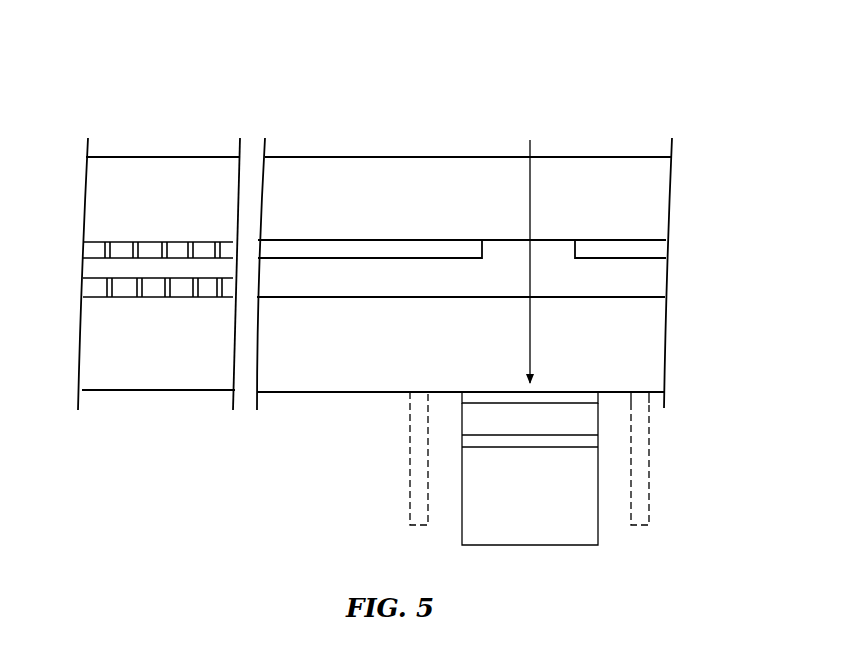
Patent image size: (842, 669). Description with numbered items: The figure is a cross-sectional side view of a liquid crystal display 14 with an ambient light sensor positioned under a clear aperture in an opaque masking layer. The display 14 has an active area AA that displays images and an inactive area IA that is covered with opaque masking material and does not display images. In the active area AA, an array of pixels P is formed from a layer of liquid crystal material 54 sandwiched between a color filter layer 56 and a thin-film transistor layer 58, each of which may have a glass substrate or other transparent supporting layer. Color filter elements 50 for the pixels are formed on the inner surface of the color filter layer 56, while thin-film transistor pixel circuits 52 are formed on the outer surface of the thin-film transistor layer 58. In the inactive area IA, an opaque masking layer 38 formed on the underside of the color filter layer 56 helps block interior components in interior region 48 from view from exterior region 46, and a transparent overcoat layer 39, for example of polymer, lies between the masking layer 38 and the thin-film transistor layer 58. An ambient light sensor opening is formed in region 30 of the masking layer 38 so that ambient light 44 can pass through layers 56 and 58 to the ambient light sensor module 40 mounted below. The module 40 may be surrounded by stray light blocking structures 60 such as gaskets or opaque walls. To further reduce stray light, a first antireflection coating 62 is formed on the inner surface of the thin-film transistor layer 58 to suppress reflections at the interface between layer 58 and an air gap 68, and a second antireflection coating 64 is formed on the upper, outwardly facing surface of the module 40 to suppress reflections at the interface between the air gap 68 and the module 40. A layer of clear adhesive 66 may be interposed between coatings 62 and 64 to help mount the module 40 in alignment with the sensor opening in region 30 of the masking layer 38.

The display 14 is at (633, 53).
The active area AA is at (235, 97).
The inactive area IA is at (670, 97).
The region 30 is at (473, 141).
The exterior region 46 is at (660, 122).
The color filter layer 56 is at (667, 203).
The ambient light 44 is at (532, 203).
The opaque masking layer 38 is at (357, 250).
The layer 39 is at (662, 277).
The thin-film transistor layer 58 is at (662, 343).
The color filter elements 50 is at (120, 246).
The liquid crystal material 54 is at (88, 266).
The thin-film transistor pixel circuits 52 is at (207, 288).
The pixels P is at (160, 305).
The interior region 48 is at (288, 452).
The air gap 68 is at (588, 410).
The ambient light sensor module 40 is at (588, 470).
The adhesive 66 is at (598, 430).
The antireflection coating 62 is at (463, 398).
The antireflection coating 64 is at (463, 442).
The stray light blocking structures 60 is at (410, 497).